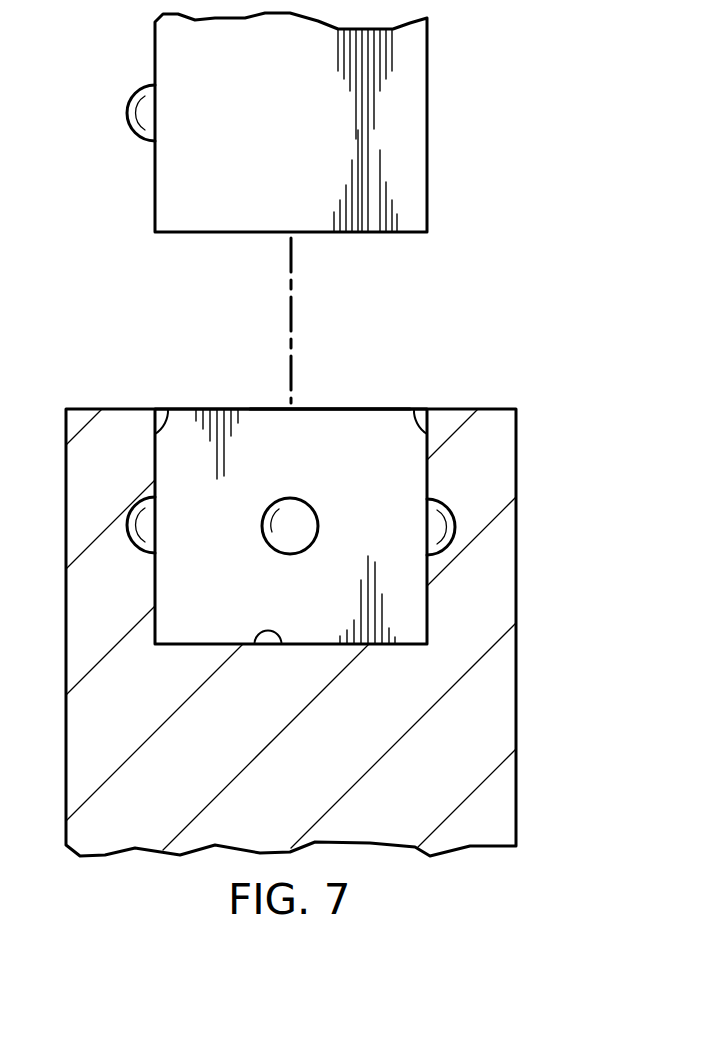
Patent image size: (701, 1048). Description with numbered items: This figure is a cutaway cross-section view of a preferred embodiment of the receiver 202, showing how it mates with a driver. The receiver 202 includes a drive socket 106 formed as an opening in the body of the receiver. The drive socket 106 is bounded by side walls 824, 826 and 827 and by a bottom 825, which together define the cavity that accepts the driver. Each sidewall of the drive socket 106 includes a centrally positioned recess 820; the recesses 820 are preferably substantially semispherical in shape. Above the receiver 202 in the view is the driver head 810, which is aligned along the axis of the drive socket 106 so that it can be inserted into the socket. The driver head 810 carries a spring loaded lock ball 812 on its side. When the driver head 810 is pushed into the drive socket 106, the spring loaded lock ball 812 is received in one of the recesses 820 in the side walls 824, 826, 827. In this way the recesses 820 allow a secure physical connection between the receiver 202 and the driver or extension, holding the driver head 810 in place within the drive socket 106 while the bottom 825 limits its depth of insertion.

The drive socket 106 is at (405, 609).
The receiver 202 is at (516, 693).
The driver head 810 is at (417, 124).
The spring loaded lock ball 812 is at (128, 113).
The recess 820 is at (290, 500).
The side wall 824 is at (413, 420).
The bottom 825 is at (258, 648).
The side wall 826 is at (170, 422).
The side wall 827 is at (328, 418).